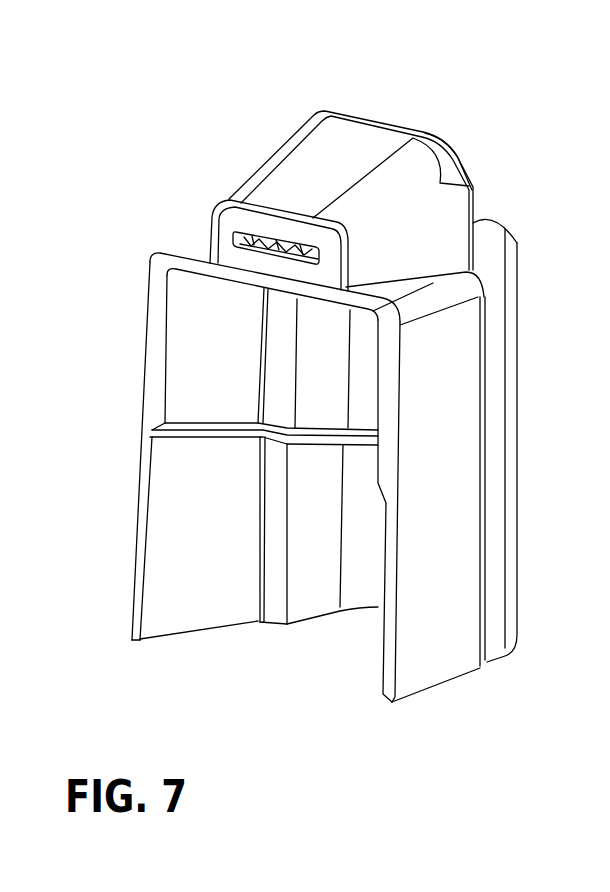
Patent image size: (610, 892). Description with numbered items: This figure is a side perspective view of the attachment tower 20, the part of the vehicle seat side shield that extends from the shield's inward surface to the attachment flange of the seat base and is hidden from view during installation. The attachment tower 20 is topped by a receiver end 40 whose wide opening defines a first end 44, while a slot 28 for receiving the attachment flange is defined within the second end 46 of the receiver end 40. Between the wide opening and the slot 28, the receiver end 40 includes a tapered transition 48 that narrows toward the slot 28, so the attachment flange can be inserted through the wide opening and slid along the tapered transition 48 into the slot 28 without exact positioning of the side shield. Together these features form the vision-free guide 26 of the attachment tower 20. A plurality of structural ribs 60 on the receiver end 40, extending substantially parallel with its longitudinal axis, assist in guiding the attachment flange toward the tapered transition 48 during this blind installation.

The attachment tower 20 is at (543, 383).
The guide 26 is at (387, 148).
The slot 28 is at (233, 234).
The receiver end 40 is at (210, 254).
The first end 44 is at (482, 193).
The second end 46 is at (220, 256).
The tapered transition 48 is at (346, 153).
The structural ribs 60 is at (313, 258).